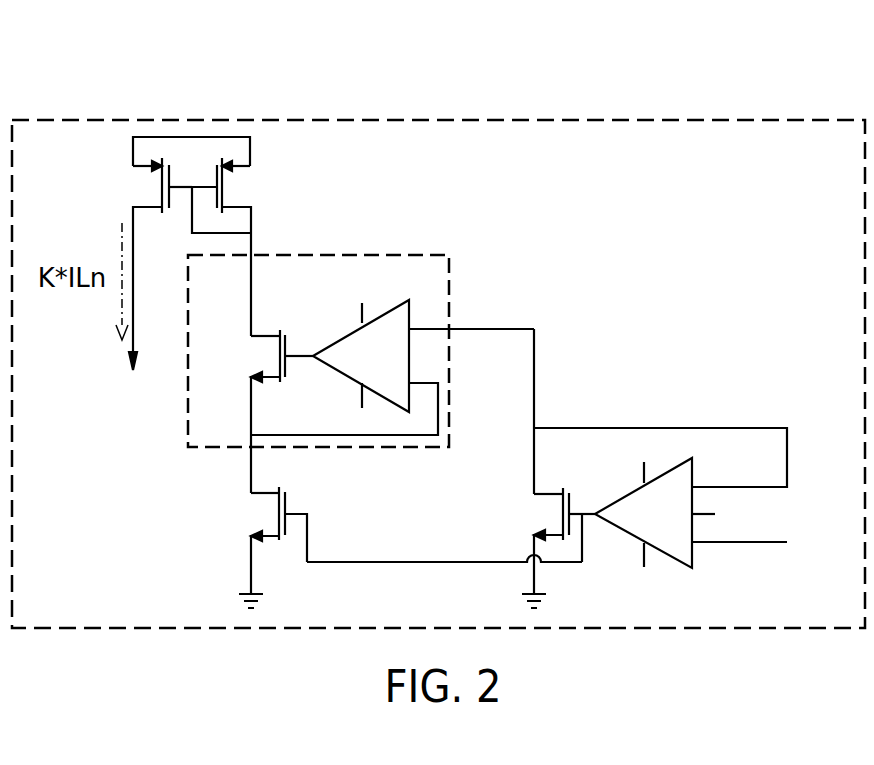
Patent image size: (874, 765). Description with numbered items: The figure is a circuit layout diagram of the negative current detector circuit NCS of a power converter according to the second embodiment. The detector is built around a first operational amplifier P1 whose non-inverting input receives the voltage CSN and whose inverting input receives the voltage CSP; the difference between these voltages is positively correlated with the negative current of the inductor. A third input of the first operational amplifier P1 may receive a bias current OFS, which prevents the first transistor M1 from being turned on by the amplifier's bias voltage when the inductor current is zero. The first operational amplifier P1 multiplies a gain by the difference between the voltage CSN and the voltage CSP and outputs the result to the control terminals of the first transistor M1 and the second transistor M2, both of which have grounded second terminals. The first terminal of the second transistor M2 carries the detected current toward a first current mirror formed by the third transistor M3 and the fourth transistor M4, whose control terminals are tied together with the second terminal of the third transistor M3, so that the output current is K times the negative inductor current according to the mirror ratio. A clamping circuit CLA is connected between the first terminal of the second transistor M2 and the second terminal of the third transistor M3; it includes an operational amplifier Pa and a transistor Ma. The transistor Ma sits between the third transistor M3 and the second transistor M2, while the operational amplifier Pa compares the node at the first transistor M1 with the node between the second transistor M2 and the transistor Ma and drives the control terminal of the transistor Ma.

The negative current detector circuit NCS is at (452, 118).
The clamping circuit CLA is at (369, 253).
The fourth transistor M4 is at (140, 264).
The third transistor M3 is at (244, 247).
The transistor Ma is at (258, 411).
The operational amplifier Pa is at (374, 328).
The first transistor M1 is at (544, 548).
The second transistor M2 is at (255, 547).
The first operational amplifier P1 is at (659, 542).
The voltage of the non-inverting input terminal CSN is at (691, 457).
The bias current OFS is at (733, 514).
The voltage of the inverting input terminal CSP is at (768, 542).